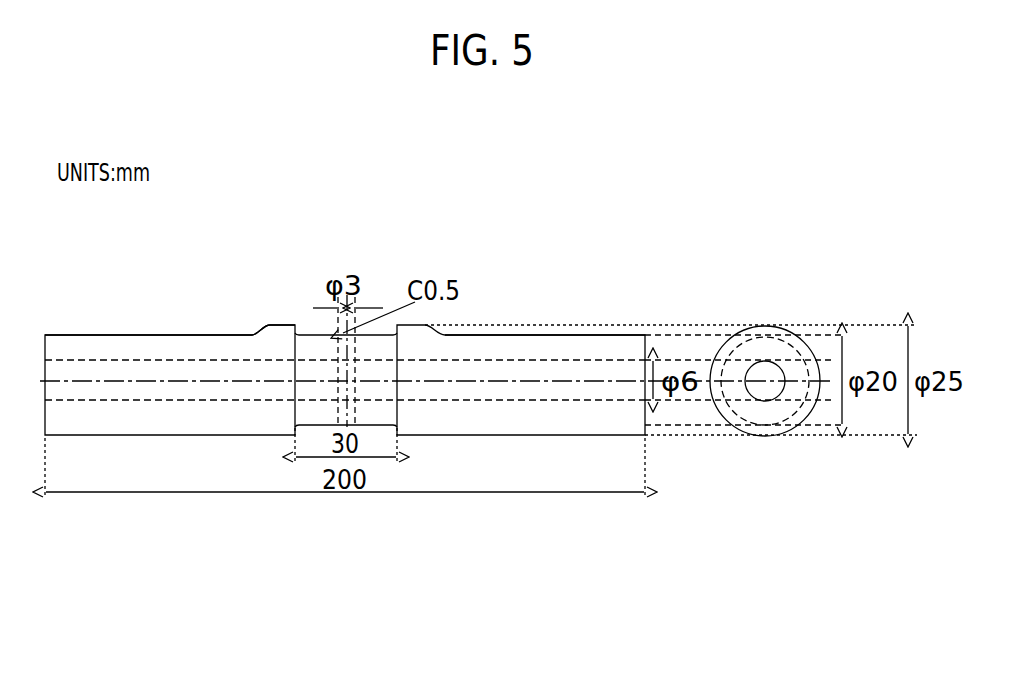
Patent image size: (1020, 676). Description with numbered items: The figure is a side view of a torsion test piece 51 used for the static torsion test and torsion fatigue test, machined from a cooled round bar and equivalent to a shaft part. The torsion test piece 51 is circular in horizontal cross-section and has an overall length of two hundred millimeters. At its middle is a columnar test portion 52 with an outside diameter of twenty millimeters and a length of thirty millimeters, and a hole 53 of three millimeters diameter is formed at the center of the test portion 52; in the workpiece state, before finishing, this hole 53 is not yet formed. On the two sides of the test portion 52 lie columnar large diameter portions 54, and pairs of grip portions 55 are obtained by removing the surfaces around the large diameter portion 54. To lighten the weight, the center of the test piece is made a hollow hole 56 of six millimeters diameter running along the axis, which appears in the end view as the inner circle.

The torsion test piece 51 is at (273, 508).
The test portion 52 is at (322, 333).
The hole 53 is at (347, 267).
The large diameter portion 54 is at (277, 333).
The grip portion 55 is at (175, 347).
The hollow hole 56 is at (495, 360).